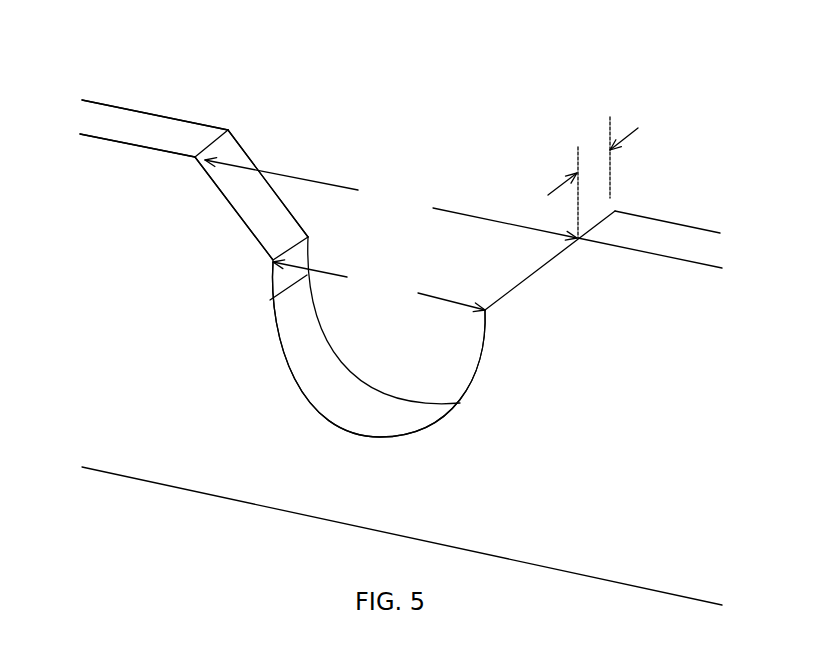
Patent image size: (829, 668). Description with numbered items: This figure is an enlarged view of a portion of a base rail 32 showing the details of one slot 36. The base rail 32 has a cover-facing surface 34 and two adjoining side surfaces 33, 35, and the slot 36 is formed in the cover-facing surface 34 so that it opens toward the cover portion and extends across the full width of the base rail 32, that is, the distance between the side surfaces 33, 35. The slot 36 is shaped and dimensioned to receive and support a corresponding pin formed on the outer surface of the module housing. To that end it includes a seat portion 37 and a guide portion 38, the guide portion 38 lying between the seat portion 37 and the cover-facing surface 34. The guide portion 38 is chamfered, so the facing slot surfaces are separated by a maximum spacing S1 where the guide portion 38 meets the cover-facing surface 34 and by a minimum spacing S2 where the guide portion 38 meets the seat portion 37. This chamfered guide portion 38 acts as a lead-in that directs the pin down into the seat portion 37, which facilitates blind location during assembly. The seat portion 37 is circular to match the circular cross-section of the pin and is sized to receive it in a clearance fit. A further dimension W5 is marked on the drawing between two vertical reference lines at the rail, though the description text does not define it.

The base rail 32 is at (146, 390).
The side surface 33 is at (112, 152).
The cover-facing surface 34 is at (148, 130).
The side surface 35 is at (217, 125).
The slot 36 is at (480, 202).
The seat portion 37 is at (350, 410).
The guide portion 38 is at (280, 221).
The maximum spacing S1 is at (391, 199).
The minimum spacing S2 is at (379, 286).
The wall width W5 is at (593, 162).